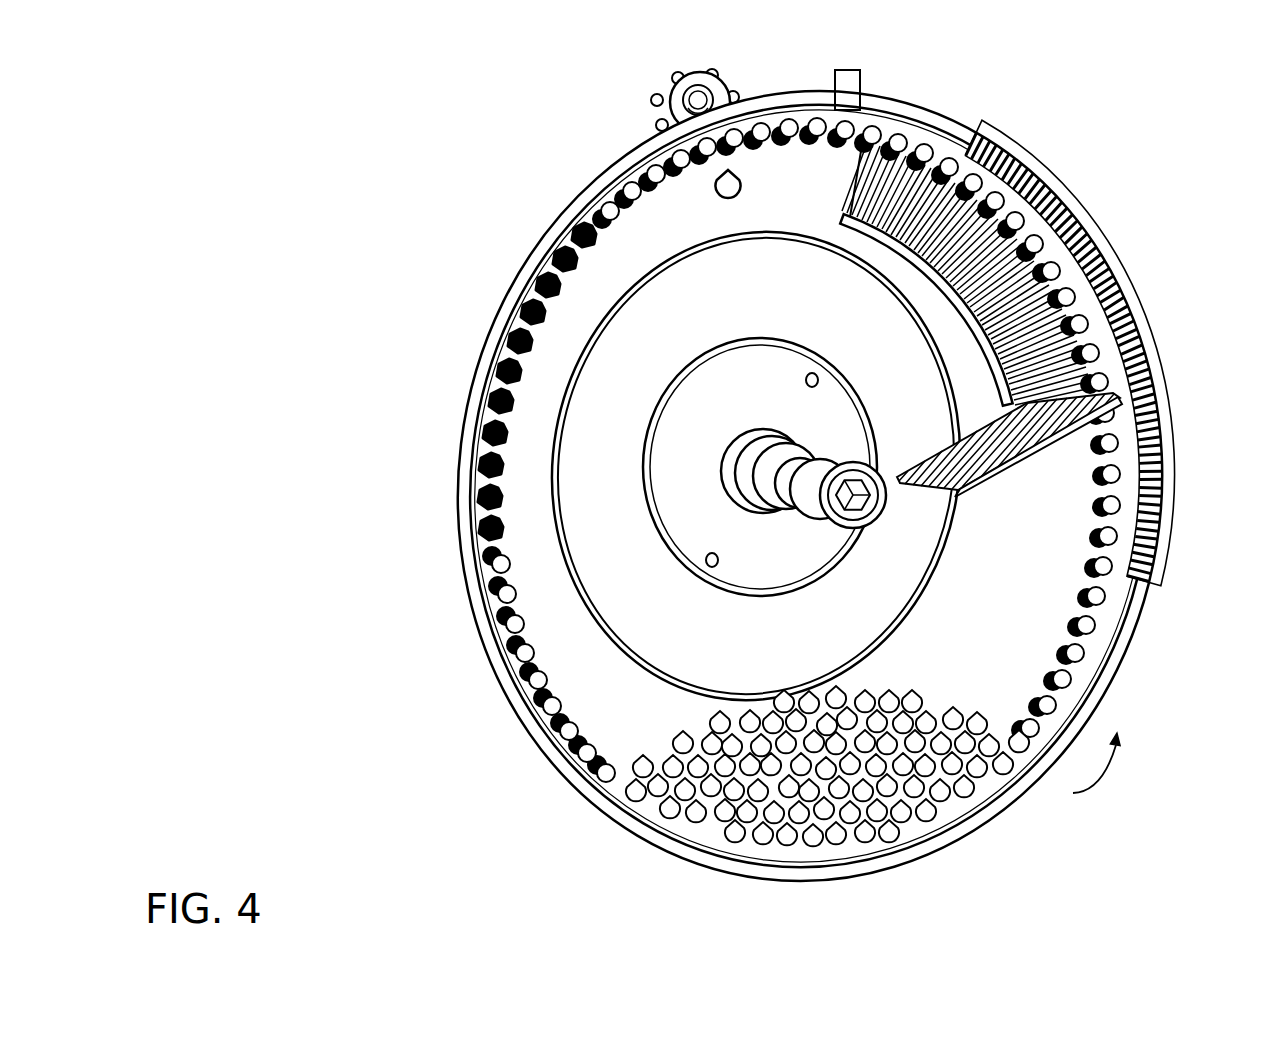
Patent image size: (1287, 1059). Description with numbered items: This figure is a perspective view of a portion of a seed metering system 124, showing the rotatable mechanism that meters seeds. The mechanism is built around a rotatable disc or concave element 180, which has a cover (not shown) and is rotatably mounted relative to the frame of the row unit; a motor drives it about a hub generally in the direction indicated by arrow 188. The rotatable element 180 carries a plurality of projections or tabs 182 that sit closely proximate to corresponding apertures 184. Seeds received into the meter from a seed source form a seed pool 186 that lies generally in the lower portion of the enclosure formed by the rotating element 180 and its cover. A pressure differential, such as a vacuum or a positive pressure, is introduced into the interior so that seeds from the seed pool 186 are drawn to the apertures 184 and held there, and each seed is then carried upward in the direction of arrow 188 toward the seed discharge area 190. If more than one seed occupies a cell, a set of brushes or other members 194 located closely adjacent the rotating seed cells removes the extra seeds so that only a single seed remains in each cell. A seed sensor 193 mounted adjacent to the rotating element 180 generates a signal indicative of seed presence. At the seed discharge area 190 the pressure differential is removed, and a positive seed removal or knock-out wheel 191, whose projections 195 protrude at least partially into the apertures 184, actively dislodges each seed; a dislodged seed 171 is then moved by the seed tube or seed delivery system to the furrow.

The seed metering system 124 is at (1178, 158).
The seed 171 is at (718, 188).
The rotatable disc 180 is at (476, 386).
The projections 182 is at (484, 482).
The apertures 184 is at (495, 497).
The seed pool 186 is at (960, 807).
The arrow 188 is at (1100, 777).
The seed discharge area 190 is at (745, 93).
The knock-out wheel 191 is at (698, 85).
The seed sensor 193 is at (865, 70).
The brushes 194 is at (1153, 335).
The projections 195 is at (676, 76).